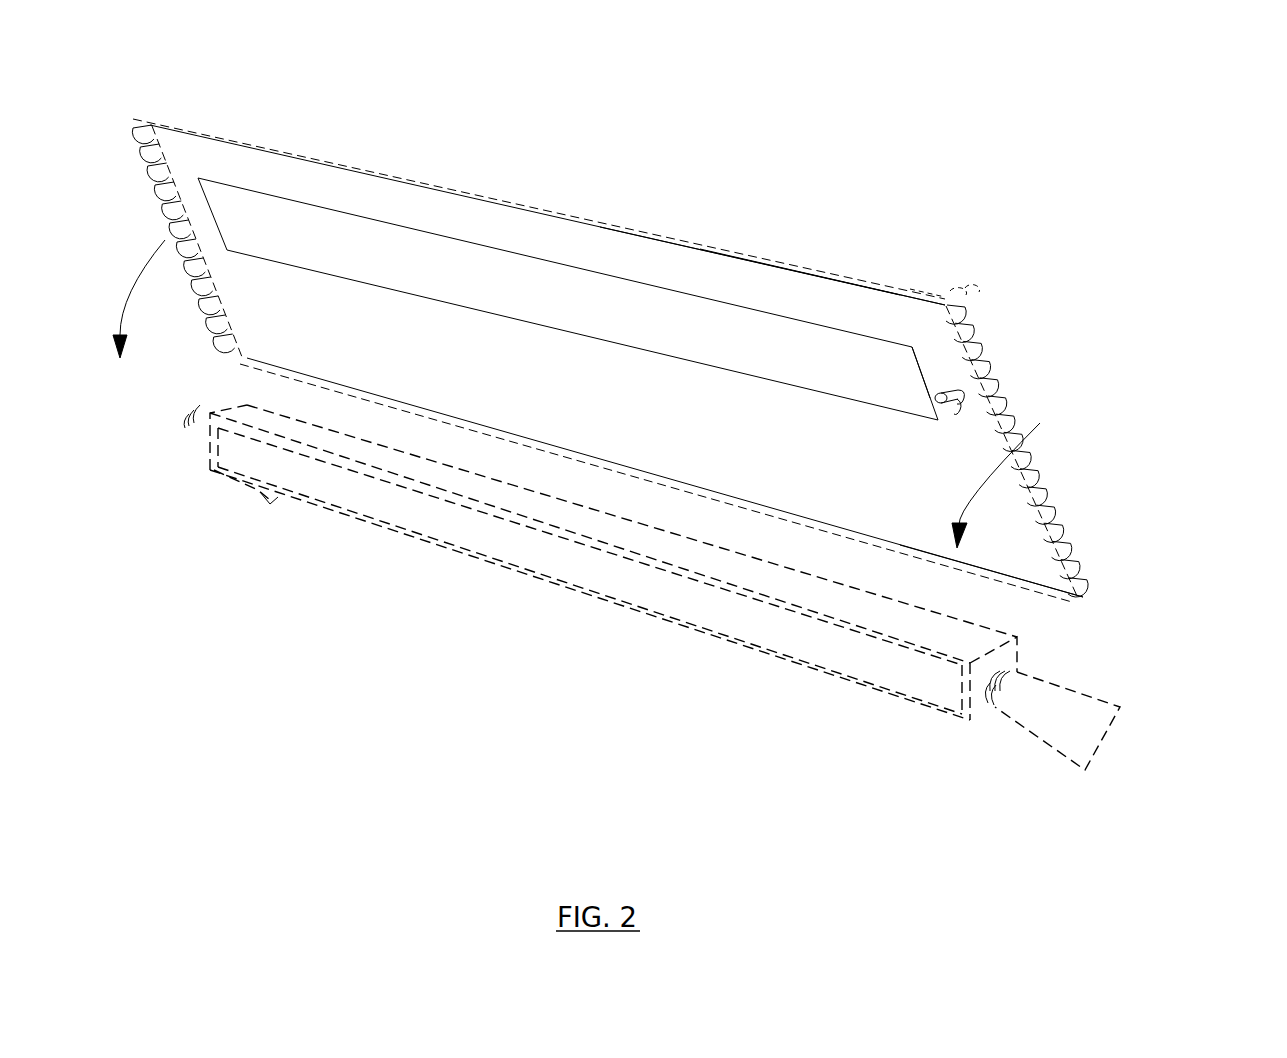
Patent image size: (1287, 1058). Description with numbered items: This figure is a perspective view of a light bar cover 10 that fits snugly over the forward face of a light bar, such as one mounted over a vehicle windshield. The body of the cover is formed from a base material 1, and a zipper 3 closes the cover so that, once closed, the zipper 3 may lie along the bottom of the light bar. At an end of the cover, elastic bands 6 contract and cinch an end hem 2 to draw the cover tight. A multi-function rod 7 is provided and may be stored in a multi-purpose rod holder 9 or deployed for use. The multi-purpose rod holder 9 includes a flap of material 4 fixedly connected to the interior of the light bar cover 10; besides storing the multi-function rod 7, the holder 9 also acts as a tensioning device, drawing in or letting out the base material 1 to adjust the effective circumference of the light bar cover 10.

The base material 1 is at (363, 198).
The end hem 2 is at (987, 410).
The zipper 3 is at (848, 277).
The flap of material 4 is at (490, 292).
The elastic bands 6 is at (992, 378).
The multi-function rod 7 is at (937, 397).
The multi-purpose rod holder 9 is at (930, 377).
The light bar cover 10 is at (735, 207).